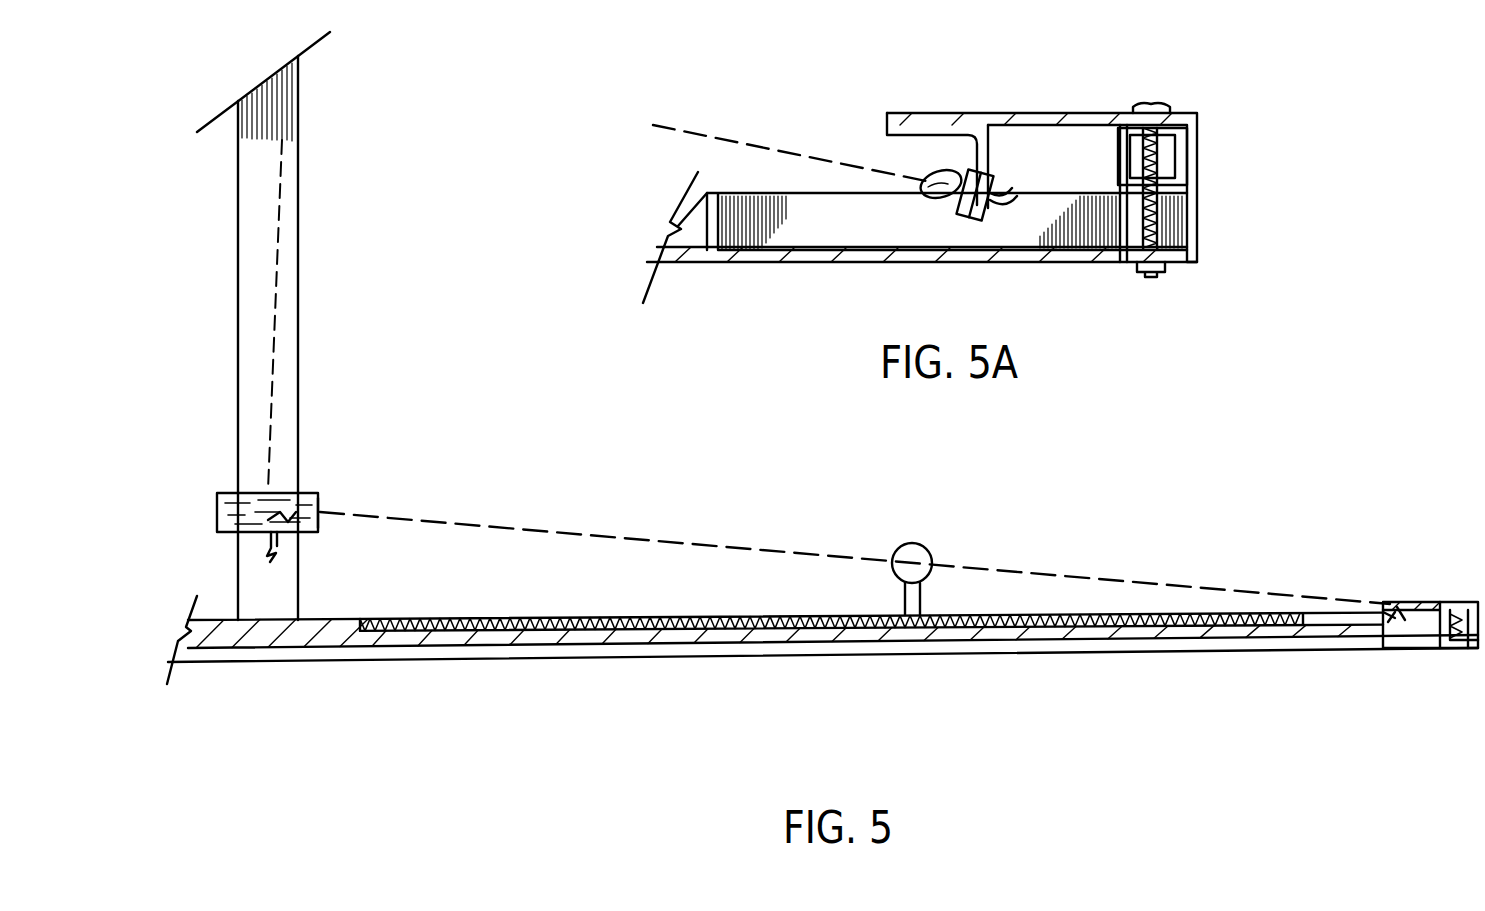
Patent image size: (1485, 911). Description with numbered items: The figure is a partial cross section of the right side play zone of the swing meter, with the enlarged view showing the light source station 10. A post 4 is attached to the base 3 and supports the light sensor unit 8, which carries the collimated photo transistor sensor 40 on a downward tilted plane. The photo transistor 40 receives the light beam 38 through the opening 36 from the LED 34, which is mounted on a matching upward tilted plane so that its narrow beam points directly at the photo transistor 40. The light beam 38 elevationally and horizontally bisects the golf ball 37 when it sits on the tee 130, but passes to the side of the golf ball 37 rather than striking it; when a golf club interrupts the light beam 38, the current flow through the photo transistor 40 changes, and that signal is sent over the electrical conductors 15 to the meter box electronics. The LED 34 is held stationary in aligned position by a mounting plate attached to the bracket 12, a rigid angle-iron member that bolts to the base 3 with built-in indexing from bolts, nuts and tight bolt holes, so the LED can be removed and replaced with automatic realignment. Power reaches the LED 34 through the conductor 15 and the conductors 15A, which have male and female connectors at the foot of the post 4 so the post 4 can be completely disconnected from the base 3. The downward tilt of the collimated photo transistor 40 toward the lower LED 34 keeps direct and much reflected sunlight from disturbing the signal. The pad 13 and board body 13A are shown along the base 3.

In FIG. 5A, the base 3 is at (740, 265).
In FIG. 5, the base 3 is at (560, 660).
In FIG. 5, the post 4 is at (297, 265).
In FIG. 5, the light sensor unit 8 is at (305, 492).
In FIG. 5A, the light source station 10 is at (1060, 112).
In FIG. 5, the light source station 10 is at (1420, 600).
In FIG. 5A, the bracket 12 is at (1205, 172).
In FIG. 5, the resilient pad 13 is at (530, 618).
In FIG. 5A, the board body 13A is at (875, 215).
In FIG. 5, the electrical conductors 15 is at (277, 232).
In FIG. 5A, the conductors 15A is at (1010, 196).
In FIG. 5, the conductors 15A is at (273, 541).
In FIG. 5A, the LED 34 is at (922, 178).
In FIG. 5, the LED 34 is at (1402, 604).
In FIG. 5, the opening 36 is at (320, 508).
In FIG. 5, the golf ball 37 is at (922, 553).
In FIG. 5A, the light beam 38 is at (718, 130).
In FIG. 5, the light beam 38 is at (660, 540).
In FIG. 5, the collimated photo transistor sensor 40 is at (225, 492).
In FIG. 5, the tee 130 is at (912, 600).